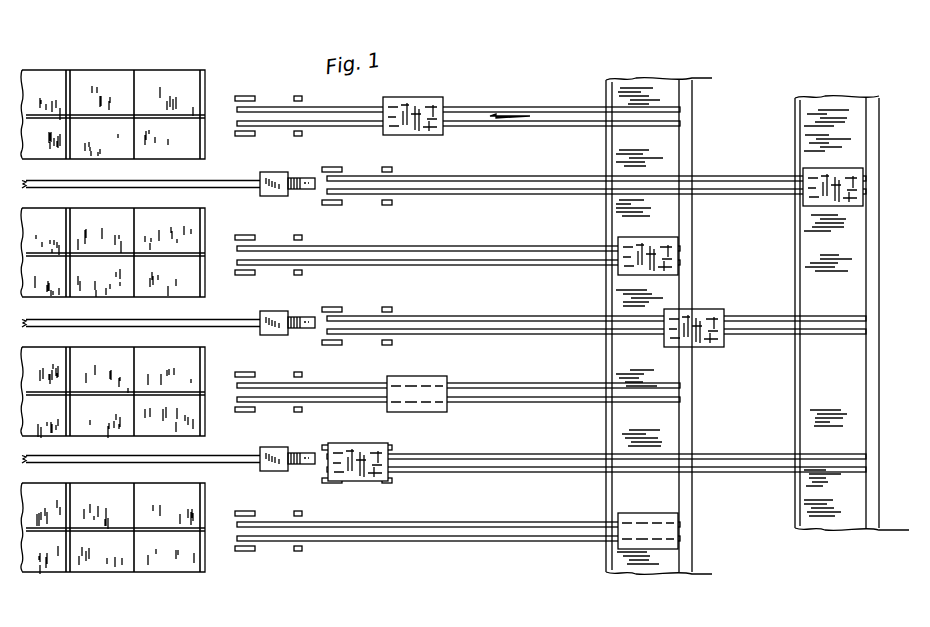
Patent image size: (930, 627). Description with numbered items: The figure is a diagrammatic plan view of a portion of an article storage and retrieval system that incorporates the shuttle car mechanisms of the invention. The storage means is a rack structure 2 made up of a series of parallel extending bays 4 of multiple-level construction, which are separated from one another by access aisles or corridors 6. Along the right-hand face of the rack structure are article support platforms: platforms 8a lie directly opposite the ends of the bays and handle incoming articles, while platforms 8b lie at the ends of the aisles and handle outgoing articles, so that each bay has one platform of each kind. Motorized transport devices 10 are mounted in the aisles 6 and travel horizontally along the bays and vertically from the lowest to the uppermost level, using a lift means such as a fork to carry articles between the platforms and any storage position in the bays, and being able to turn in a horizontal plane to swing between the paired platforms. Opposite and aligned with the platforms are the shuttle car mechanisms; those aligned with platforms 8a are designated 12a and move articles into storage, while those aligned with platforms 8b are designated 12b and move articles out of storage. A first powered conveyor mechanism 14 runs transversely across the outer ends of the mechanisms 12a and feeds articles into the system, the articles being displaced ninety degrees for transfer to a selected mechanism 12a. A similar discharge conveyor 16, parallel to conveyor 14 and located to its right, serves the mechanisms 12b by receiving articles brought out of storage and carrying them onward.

The rack structure 2 is at (100, 68).
The bays 4 is at (134, 90).
The access aisles 6 is at (170, 172).
The platforms 8a is at (298, 96).
The platforms 8b is at (388, 168).
The transport devices 10 is at (318, 160).
The shuttle car mechanisms 12a is at (466, 96).
The shuttle car mechanisms 12b is at (500, 170).
The first powered conveyor mechanism 14 is at (662, 68).
The discharge conveyor 16 is at (864, 86).